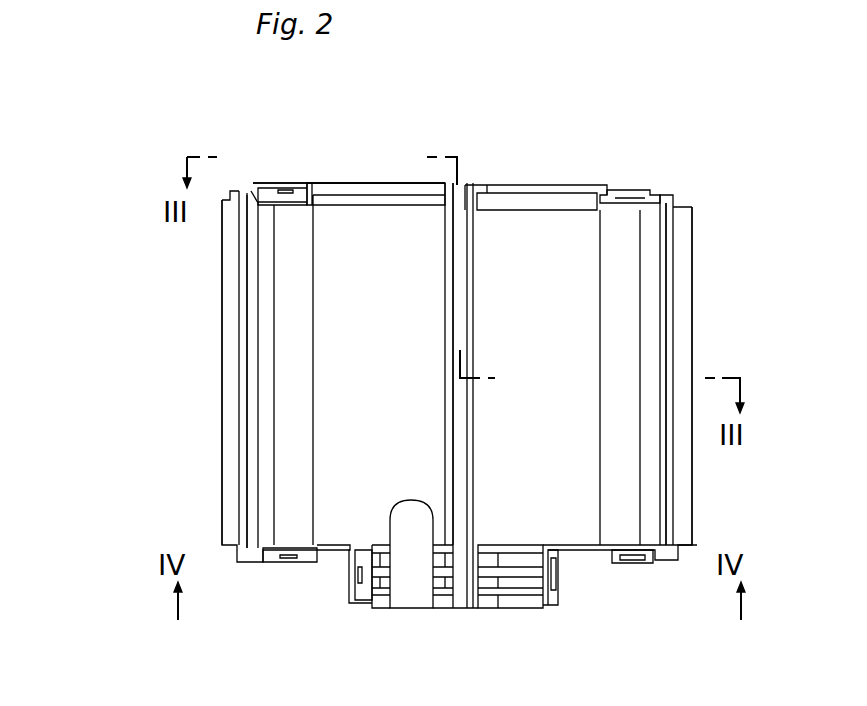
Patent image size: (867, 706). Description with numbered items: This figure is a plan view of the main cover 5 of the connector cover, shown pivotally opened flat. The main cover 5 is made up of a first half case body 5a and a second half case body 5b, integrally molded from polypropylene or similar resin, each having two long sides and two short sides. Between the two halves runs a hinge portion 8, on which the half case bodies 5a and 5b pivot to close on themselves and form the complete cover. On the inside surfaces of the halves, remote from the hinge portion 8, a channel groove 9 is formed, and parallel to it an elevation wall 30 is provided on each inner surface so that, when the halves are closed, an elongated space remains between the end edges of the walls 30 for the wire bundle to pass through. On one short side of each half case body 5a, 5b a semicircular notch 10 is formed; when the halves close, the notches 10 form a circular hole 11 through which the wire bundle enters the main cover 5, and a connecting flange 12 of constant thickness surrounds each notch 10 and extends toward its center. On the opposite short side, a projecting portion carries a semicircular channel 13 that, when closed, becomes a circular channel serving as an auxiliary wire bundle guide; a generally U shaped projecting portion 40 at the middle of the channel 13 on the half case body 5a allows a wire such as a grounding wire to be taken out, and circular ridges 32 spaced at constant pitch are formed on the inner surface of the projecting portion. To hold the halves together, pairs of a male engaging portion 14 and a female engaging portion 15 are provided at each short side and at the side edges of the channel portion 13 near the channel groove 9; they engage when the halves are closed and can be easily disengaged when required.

The main cover 5 is at (706, 314).
The first half case body 5a is at (340, 535).
The second half case body 5b is at (575, 525).
The hinge portion 8 is at (462, 262).
The channel groove 9 is at (235, 283).
The semicircular notch 10 is at (372, 183).
The circular hole 11 is at (336, 157).
The connecting flange 12 is at (305, 183).
The semicircular channel 13 is at (402, 600).
The male engaging portion 14 is at (630, 190).
The female engaging portion 15 is at (270, 183).
The elevation wall 30 is at (275, 345).
The circular ridges 32 is at (490, 612).
The U shaped projecting portion 40 is at (420, 612).